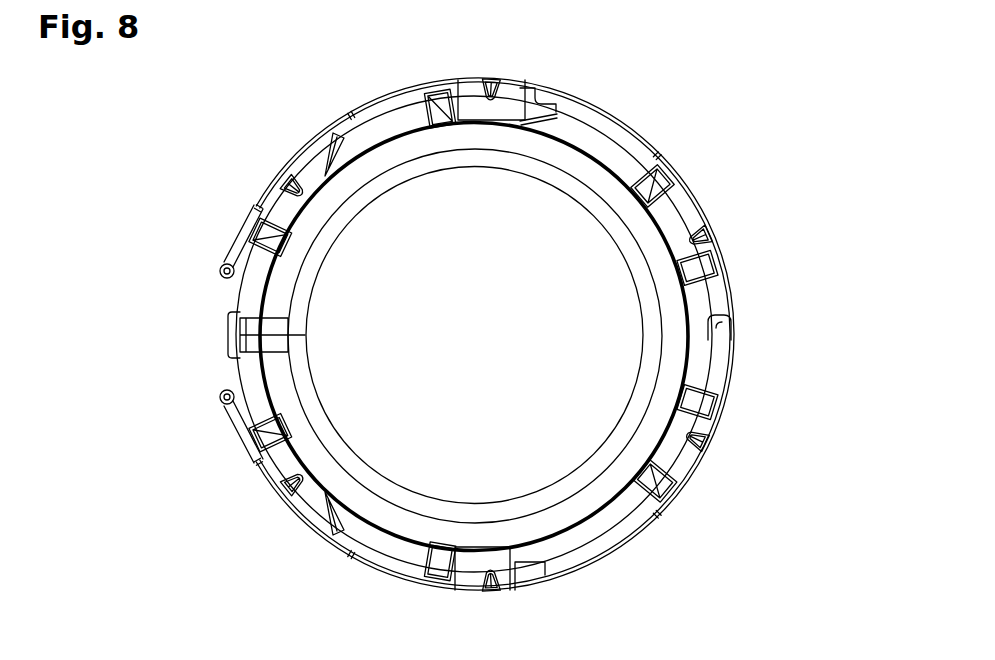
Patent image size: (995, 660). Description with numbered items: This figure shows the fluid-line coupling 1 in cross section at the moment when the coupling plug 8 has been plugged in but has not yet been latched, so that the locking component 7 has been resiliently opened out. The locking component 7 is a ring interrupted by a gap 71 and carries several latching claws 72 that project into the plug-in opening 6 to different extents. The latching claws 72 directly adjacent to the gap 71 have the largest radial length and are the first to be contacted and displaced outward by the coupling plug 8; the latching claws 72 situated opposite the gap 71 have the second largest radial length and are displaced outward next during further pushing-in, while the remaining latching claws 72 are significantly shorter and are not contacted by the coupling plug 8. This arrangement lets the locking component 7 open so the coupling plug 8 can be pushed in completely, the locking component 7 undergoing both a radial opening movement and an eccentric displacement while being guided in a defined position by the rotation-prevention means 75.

The fluid-line coupling 1 is at (812, 112).
The plug-in opening 6 is at (534, 312).
The locking component 7 is at (465, 353).
The coupling plug 8 is at (590, 168).
The gap 71 is at (214, 352).
The latching claws 72 is at (310, 500).
The rotation-prevention means 75 is at (735, 327).